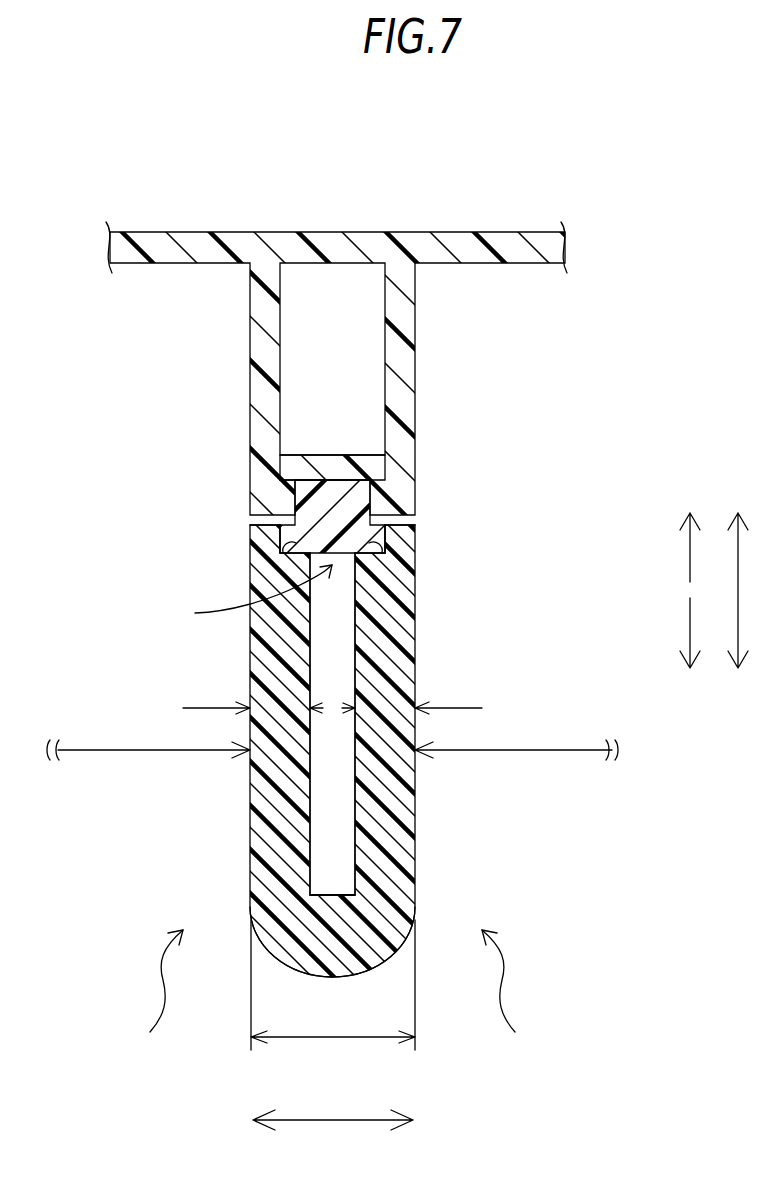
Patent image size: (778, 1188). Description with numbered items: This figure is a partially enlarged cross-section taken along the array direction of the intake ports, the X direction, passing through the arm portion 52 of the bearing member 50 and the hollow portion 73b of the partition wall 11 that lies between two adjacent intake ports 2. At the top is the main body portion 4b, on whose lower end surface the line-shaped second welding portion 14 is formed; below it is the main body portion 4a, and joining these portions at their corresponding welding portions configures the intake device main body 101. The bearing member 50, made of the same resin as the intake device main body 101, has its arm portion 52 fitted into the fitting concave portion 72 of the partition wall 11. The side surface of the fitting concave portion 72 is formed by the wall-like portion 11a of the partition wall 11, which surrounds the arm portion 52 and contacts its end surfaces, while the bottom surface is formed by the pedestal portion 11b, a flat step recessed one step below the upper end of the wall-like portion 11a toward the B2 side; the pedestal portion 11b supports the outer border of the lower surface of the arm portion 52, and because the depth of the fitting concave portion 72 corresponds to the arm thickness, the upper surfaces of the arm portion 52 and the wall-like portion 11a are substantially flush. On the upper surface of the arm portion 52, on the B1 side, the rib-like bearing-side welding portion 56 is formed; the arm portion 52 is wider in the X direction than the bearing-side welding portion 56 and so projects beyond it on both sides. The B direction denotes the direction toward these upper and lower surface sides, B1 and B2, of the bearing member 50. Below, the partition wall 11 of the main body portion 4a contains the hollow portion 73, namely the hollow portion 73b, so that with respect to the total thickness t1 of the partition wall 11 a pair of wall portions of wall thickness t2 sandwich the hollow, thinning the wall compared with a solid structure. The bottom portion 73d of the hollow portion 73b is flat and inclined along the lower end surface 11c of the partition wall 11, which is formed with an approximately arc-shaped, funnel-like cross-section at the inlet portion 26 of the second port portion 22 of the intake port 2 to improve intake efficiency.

The main body portion 4b is at (389, 348).
The intake device main body 101 is at (389, 348).
The second welding portion 14 is at (348, 478).
The bearing-side welding portion 56 is at (308, 478).
The arm portion 52 is at (305, 480).
The bearing member 50 is at (305, 458).
The partition wall 11 is at (389, 745).
The main body portion 4a is at (389, 745).
The wall-like portion 11a is at (250, 528).
The pedestal portion 11b is at (295, 537).
The lower end surface 11c is at (335, 976).
The hollow portion 73 is at (432, 724).
The hollow portion 73b is at (432, 724).
The bottom portion 73d is at (332, 895).
The fitting concave portion 72 is at (257, 605).
The second port portion 22 is at (183, 750).
The intake port 2 is at (332, 787).
The inlet portion 26 is at (337, 996).
The total thickness t1 is at (333, 994).
The wall thickness t2 is at (332, 696).
The X direction X is at (333, 1132).
The B direction B is at (719, 590).
The B1 side B1 is at (700, 547).
The B2 side B2 is at (700, 633).